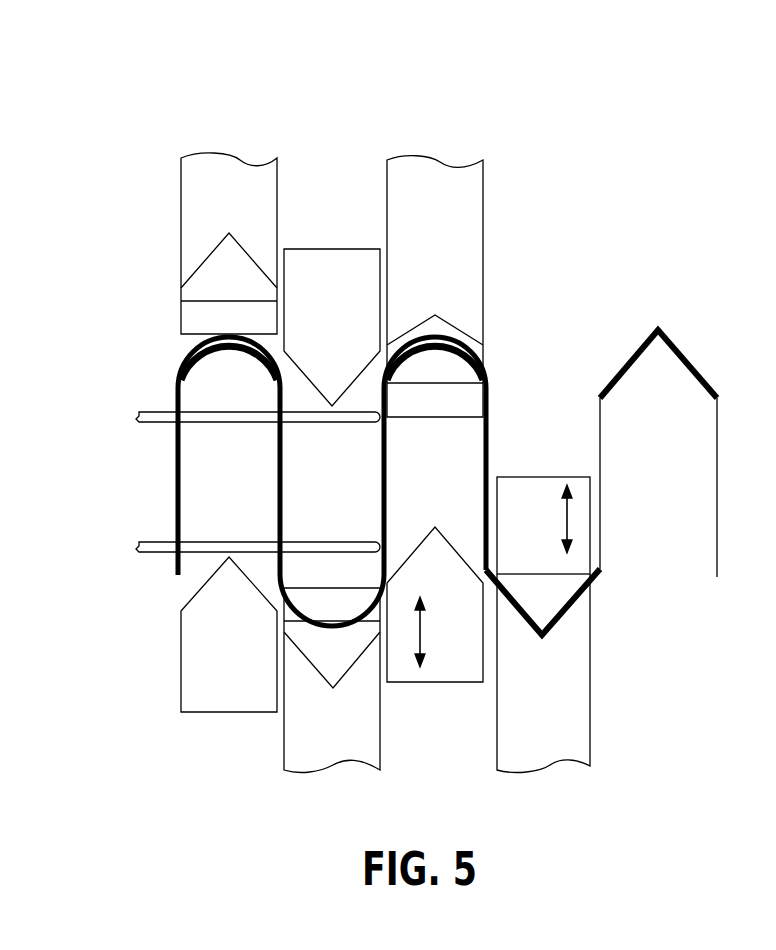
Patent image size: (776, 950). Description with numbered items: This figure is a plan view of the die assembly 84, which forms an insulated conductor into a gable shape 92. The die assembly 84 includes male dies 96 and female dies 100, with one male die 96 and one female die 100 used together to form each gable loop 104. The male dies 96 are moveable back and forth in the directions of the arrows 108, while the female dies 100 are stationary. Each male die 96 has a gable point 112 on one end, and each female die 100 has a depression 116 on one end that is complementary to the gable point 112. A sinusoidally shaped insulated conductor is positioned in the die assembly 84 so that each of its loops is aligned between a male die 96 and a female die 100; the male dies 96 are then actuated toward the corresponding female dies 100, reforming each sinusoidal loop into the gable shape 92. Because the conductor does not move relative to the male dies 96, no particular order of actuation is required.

The die assembly 84 is at (647, 123).
The gable shape 92 is at (602, 298).
The male die 96 is at (525, 493).
The female die 100 is at (473, 318).
The gable loop 104 is at (662, 331).
The arrows 108 is at (570, 522).
The gable point 112 is at (218, 565).
The depression 116 is at (220, 262).